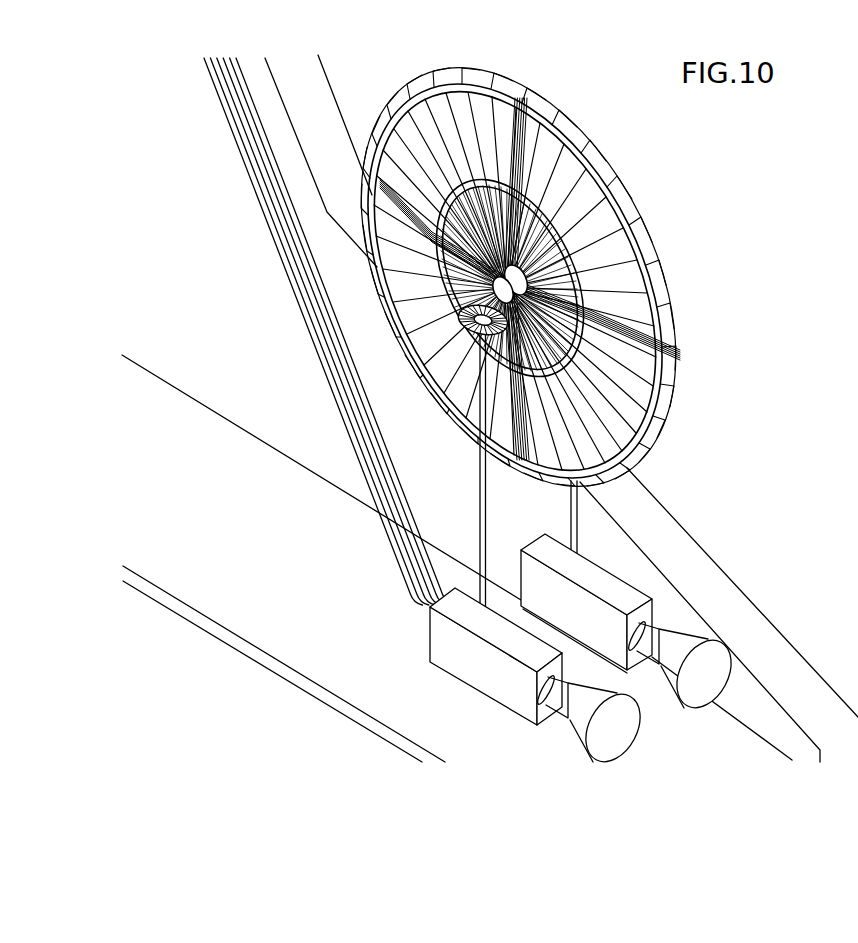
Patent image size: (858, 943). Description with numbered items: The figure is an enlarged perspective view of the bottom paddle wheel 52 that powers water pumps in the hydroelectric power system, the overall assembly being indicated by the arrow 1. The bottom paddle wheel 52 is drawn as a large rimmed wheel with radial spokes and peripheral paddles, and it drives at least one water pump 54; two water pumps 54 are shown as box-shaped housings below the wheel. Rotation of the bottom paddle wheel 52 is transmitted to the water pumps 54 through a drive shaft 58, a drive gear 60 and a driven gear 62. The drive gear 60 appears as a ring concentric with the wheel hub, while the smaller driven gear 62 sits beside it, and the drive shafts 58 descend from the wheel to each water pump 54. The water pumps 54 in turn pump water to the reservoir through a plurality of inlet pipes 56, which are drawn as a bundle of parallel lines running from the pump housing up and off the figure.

The wind driven apparatus 1 is at (792, 582).
The bottom paddle wheel 52 is at (625, 170).
The water pump 54 is at (614, 597).
The inlet pipes 56 is at (380, 522).
The drive shaft 58 is at (484, 535).
The drive gear 60 is at (417, 250).
The driven gear 62 is at (466, 330).